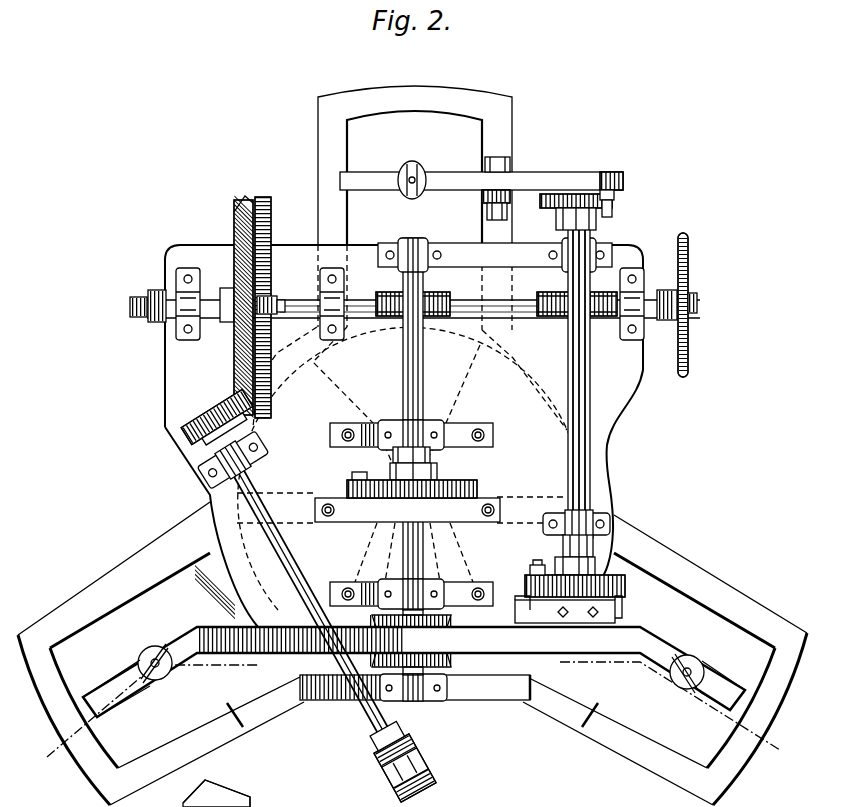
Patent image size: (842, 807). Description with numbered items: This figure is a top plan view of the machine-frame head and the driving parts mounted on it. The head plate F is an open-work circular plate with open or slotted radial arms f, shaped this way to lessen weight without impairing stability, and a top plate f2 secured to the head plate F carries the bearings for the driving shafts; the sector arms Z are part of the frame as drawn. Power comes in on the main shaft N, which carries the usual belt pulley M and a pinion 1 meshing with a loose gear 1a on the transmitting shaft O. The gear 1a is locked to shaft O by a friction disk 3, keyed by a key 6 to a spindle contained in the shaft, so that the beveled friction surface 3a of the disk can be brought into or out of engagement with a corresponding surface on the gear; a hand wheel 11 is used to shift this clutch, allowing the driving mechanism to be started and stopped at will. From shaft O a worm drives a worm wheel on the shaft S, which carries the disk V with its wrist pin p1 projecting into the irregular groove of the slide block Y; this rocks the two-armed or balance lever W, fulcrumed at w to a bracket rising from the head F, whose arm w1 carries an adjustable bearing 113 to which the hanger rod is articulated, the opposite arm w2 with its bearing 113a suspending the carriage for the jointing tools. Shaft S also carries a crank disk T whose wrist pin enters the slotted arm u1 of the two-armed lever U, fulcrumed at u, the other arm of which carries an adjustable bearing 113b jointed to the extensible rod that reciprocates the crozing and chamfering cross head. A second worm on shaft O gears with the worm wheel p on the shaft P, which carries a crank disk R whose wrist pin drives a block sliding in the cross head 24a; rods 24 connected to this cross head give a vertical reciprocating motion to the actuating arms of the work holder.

The radial arms of the head plate f is at (710, 600).
The top plate f2 is at (409, 427).
The head plate F is at (668, 552).
The sector arms Z is at (780, 750).
The balance lever W is at (413, 692).
The fulcrum of lever W w is at (445, 668).
The arm of lever W w1 is at (722, 680).
The left pivot plate w2 is at (102, 685).
The bearing 113 is at (683, 688).
The left pivot 113a is at (155, 645).
The bearing 113b is at (428, 150).
The transmitting shaft O is at (370, 313).
The loose gear 1a is at (237, 357).
The pinion 1 is at (205, 430).
The friction disk 3 is at (270, 230).
The beveled friction surface 3a is at (225, 795).
The key 6 is at (265, 305).
The worm wheel p is at (448, 318).
The shaft P is at (423, 378).
The wrist pin p1 is at (528, 583).
The main shaft N is at (392, 737).
The belt pulley M is at (435, 770).
The hand wheel 11 is at (690, 283).
The rods 24 is at (493, 523).
The cross head 24a is at (425, 527).
The crank disk R is at (465, 487).
The shaft S is at (583, 392).
The crank disk T is at (622, 206).
The disk V is at (618, 588).
The slide block Y is at (622, 610).
The two-armed lever U is at (547, 182).
The fulcrum of lever U u is at (482, 195).
The slotted arm of lever U u1 is at (622, 178).